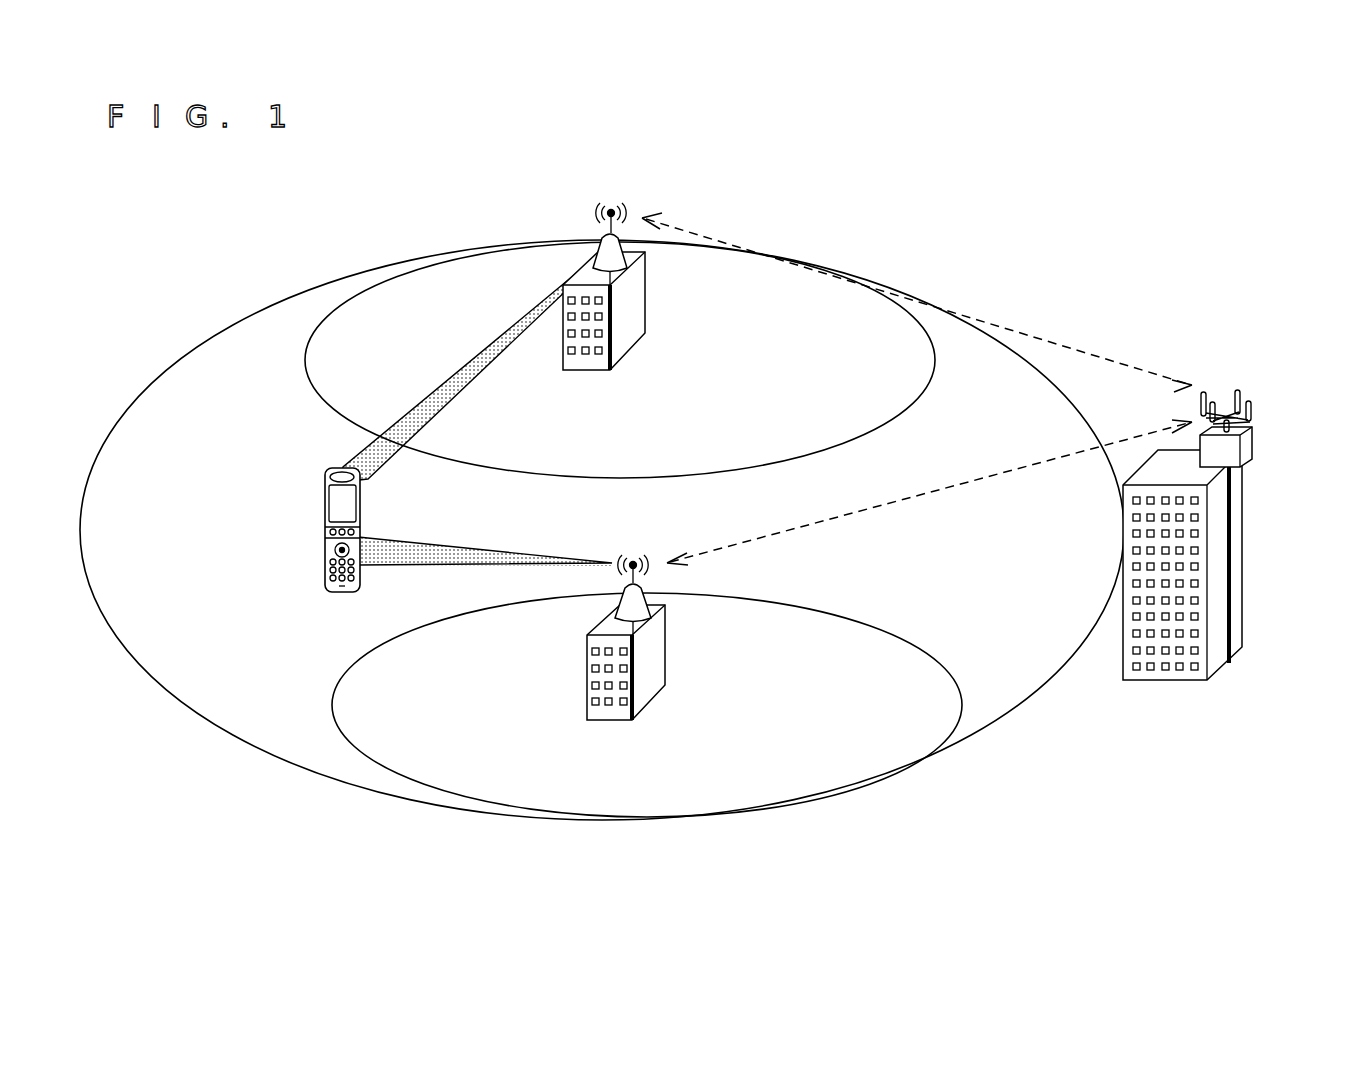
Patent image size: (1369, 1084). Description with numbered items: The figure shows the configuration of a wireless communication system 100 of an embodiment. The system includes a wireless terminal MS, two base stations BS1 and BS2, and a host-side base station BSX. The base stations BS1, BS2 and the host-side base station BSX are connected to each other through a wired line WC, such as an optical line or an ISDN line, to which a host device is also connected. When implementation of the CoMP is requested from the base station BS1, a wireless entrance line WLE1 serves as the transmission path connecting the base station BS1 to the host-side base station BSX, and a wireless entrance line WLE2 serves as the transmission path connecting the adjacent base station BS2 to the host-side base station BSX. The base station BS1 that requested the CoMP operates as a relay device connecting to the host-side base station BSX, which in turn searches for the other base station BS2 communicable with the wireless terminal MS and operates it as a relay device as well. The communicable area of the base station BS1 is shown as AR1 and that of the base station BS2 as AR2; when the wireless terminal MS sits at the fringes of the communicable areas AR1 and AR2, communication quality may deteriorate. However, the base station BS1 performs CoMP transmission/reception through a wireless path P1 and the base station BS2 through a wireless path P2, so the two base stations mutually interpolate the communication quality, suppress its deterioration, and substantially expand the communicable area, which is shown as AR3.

The wireless communication system 100 is at (1132, 172).
The base station BS1 is at (626, 205).
The base station BS2 is at (645, 562).
The host-side base station BSX is at (1254, 450).
The wired line WC is at (622, 350).
The wireless terminal MS is at (360, 584).
The communicable area AR1 is at (477, 277).
The communicable area AR2 is at (594, 793).
The communicable area AR3 is at (258, 732).
The wireless path P1 is at (457, 380).
The wireless path P2 is at (433, 550).
The wireless entrance line WLE1 is at (1062, 343).
The wireless entrance line WLE2 is at (988, 479).